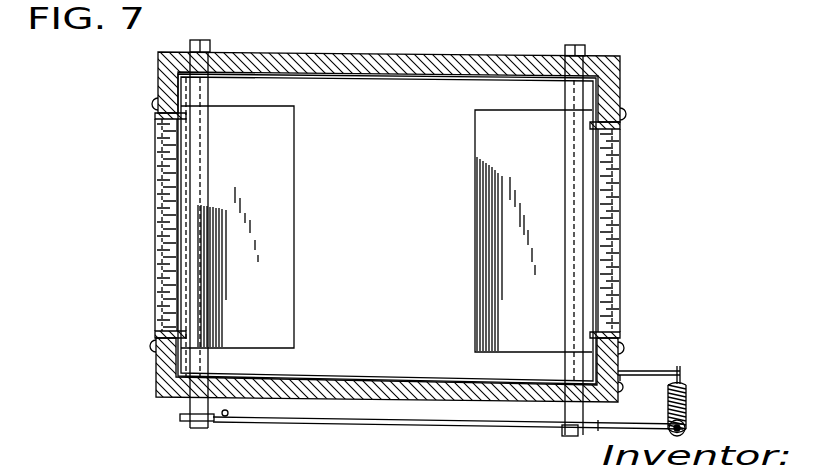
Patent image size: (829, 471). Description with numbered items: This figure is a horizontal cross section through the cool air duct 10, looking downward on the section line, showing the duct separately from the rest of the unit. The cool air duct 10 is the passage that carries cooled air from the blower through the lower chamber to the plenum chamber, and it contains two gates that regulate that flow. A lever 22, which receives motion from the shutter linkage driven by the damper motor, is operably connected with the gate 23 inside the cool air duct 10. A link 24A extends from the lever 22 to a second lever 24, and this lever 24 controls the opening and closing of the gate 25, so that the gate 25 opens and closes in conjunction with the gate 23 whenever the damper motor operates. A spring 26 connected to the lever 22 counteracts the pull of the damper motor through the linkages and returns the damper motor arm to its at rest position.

The cool air duct 10 is at (345, 399).
The lever 22 is at (658, 422).
The gate 23 is at (498, 274).
The lever 24 is at (212, 424).
The link 24A is at (408, 428).
The gate 25 is at (282, 200).
The spring 26 is at (686, 406).